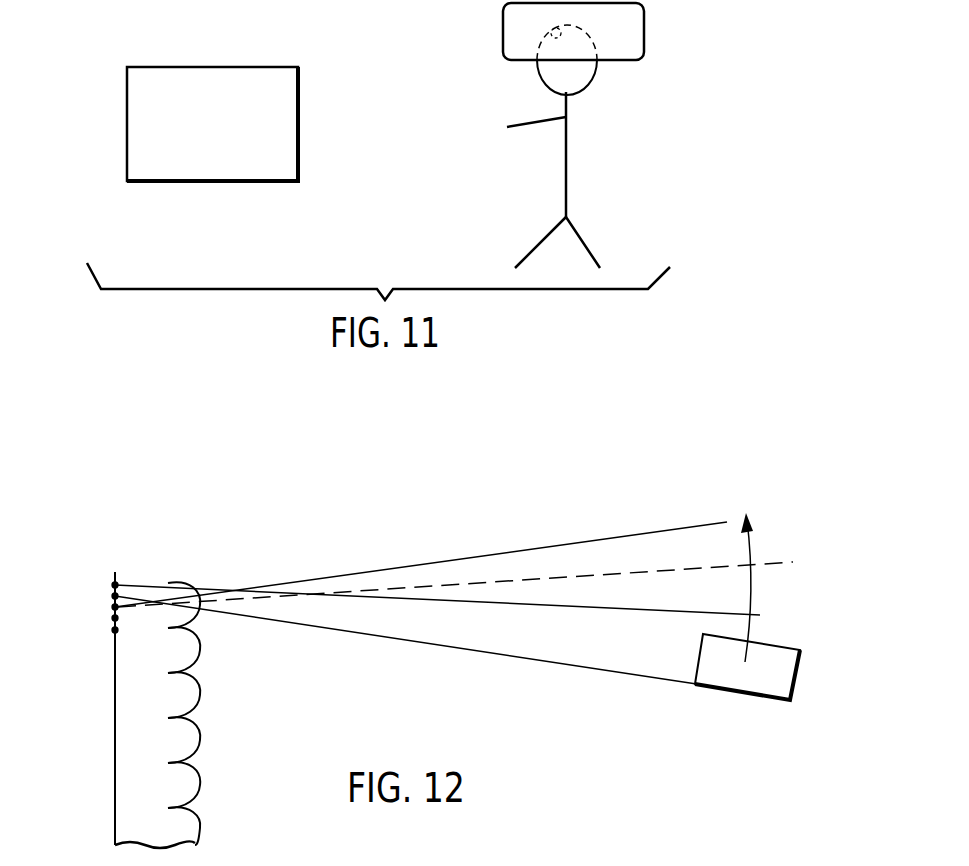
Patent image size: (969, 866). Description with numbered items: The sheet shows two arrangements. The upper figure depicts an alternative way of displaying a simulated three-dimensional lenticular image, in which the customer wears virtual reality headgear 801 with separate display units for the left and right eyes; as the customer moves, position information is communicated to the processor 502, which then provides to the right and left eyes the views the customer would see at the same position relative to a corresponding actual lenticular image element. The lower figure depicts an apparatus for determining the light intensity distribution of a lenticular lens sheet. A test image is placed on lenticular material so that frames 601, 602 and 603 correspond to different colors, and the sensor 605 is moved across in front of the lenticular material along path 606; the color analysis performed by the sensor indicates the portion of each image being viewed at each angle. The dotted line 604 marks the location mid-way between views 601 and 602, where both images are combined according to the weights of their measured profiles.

In FIG. 11, the processor 502 is at (253, 67).
In FIG. 11, the head-mounted display 801 is at (645, 33).
In FIG. 12, the image frame 601 is at (114, 585).
In FIG. 12, the image frame 602 is at (113, 596).
In FIG. 12, the image frame 603 is at (112, 607).
In FIG. 12, the dotted line 604 is at (618, 571).
In FIG. 12, the sensor 605 is at (722, 688).
In FIG. 12, the path 606 is at (763, 590).